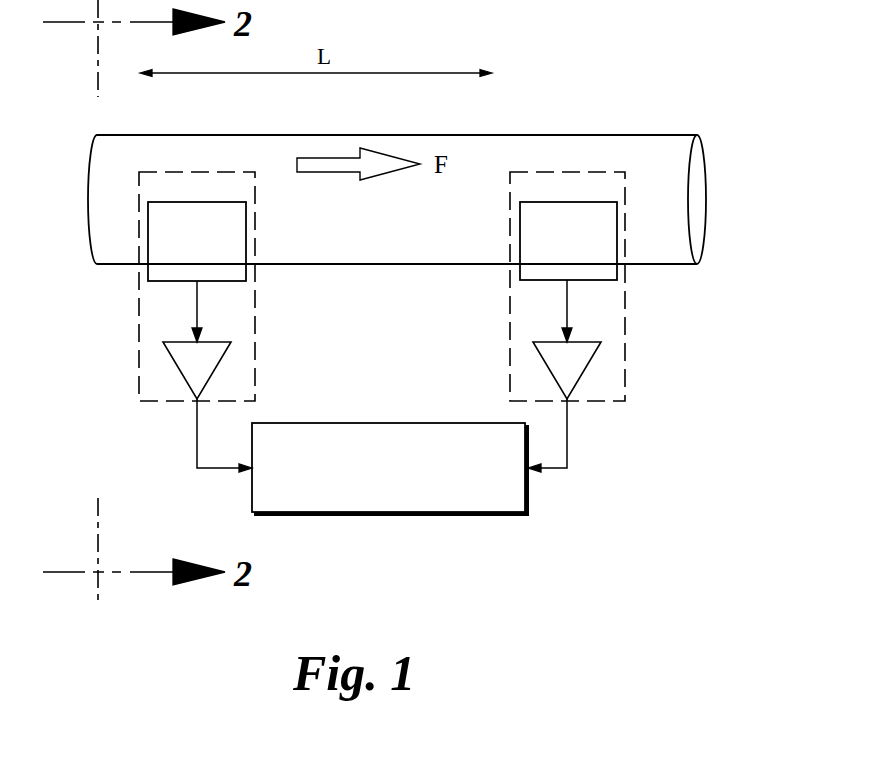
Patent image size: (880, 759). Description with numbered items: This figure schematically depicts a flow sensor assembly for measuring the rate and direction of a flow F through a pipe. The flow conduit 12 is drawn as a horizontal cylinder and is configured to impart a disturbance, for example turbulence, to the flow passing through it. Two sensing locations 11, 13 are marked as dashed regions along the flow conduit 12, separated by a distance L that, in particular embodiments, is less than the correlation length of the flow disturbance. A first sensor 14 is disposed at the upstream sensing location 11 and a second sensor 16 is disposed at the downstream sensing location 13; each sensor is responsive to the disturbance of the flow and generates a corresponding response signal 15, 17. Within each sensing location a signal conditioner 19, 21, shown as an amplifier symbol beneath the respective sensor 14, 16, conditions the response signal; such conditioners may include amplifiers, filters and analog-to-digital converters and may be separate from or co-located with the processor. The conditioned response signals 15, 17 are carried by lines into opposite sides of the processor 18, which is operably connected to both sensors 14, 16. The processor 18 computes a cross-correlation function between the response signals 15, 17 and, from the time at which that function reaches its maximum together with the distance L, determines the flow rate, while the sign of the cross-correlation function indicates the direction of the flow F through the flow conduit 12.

The sensing location 11 is at (139, 368).
The flow conduit 12 is at (683, 132).
The sensing location 13 is at (577, 170).
The sensor 14 is at (224, 283).
The response signal 15 is at (195, 455).
The sensor 16 is at (595, 283).
The response signal 17 is at (567, 432).
The processor 18 is at (528, 500).
The signal conditioner 19 is at (217, 368).
The signal conditioner 21 is at (588, 368).